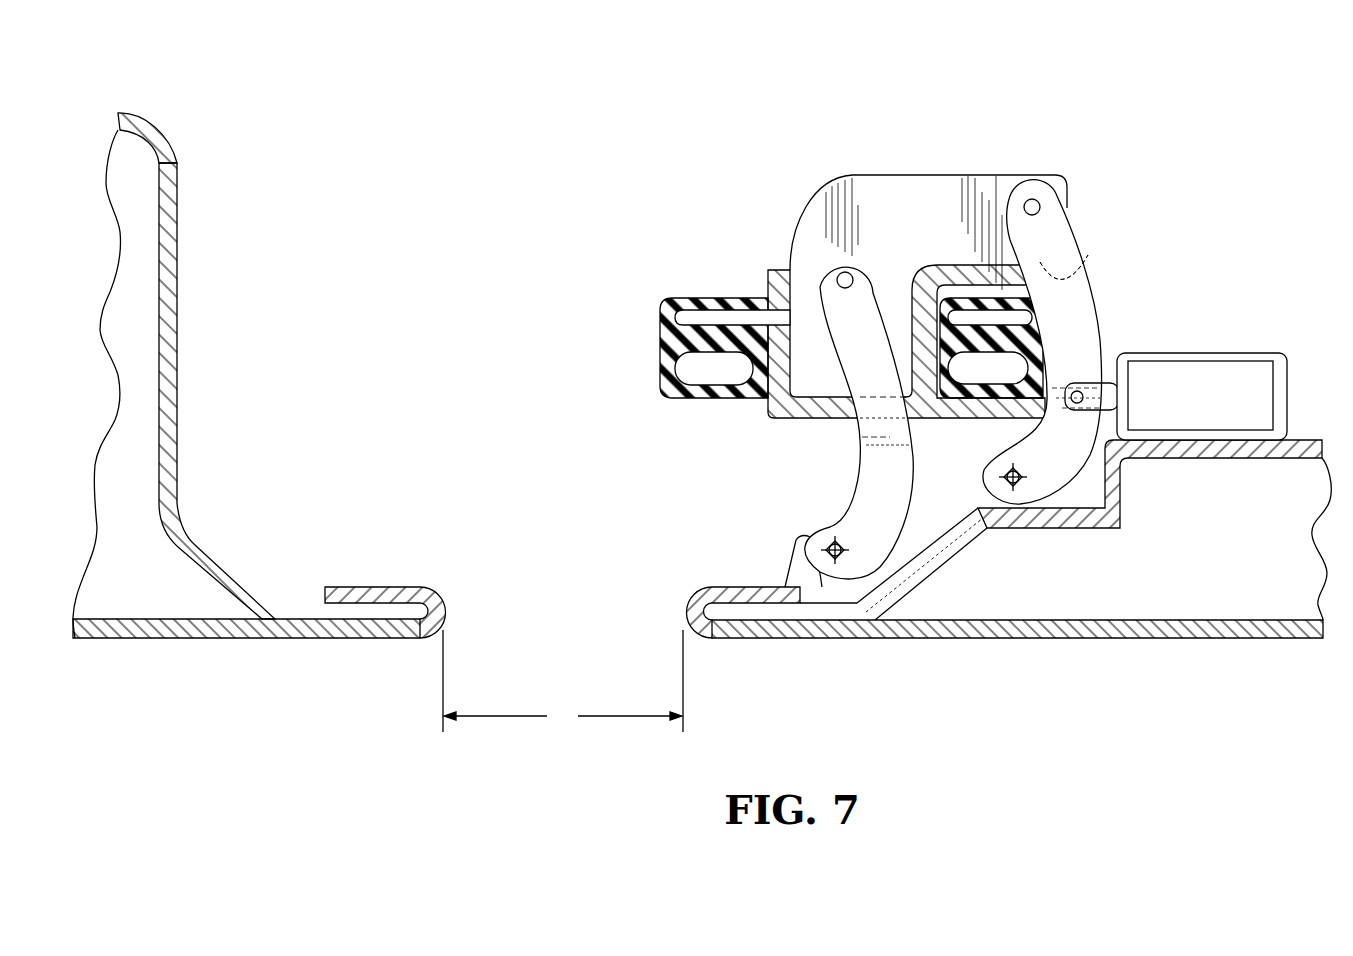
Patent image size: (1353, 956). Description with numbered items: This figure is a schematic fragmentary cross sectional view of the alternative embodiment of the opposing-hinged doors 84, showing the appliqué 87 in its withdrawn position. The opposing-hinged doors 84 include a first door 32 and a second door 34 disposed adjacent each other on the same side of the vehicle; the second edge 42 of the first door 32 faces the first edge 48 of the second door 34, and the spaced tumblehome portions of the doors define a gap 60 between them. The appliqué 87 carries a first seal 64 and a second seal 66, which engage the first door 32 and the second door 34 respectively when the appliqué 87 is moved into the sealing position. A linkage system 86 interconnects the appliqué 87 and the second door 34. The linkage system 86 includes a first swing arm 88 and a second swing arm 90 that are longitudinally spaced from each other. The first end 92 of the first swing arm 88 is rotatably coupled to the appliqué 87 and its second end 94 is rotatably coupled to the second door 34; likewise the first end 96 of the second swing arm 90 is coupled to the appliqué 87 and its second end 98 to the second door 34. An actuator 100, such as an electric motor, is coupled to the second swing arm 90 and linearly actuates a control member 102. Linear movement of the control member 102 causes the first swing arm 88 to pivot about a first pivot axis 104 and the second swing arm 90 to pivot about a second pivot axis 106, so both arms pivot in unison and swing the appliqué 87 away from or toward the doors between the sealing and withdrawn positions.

The first door 32 is at (235, 640).
The second door 34 is at (1090, 638).
The second edge 42 is at (445, 612).
The first edge 48 is at (686, 618).
The gap 60 is at (563, 681).
The first seal 64 is at (662, 370).
The second seal 66 is at (990, 398).
The opposing-hinged doors 84 is at (692, 132).
The linkage system 86 is at (1140, 317).
The appliqué 87 is at (800, 420).
The first swing arm 88 is at (860, 437).
The second swing arm 90 is at (1085, 305).
The first end 92 is at (828, 260).
The second end 94 is at (830, 580).
The first end 96 is at (1023, 183).
The second end 98 is at (980, 509).
The actuator 100 is at (1207, 353).
The control member 102 is at (1102, 410).
The first pivot axis 104 is at (812, 558).
The second pivot axis 106 is at (1024, 485).